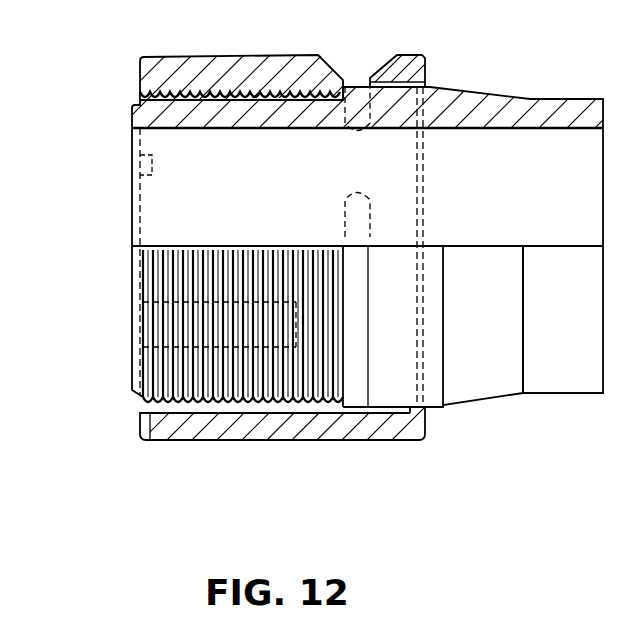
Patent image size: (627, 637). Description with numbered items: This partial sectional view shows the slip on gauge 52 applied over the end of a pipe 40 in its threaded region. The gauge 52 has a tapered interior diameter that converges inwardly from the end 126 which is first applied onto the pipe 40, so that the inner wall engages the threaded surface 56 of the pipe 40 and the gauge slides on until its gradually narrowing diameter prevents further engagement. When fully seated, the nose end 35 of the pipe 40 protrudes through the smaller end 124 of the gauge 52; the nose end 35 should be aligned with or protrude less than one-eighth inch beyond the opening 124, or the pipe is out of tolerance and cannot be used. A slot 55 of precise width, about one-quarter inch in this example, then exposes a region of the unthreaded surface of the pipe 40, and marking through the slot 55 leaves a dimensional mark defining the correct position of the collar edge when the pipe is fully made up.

The pipe 40 is at (503, 97).
The threaded surface 56 is at (268, 60).
The smaller end 124 is at (140, 88).
The end 126 is at (425, 62).
The slot 55 is at (359, 194).
The nose end 35 is at (130, 322).
The slip on gauge 52 is at (148, 443).